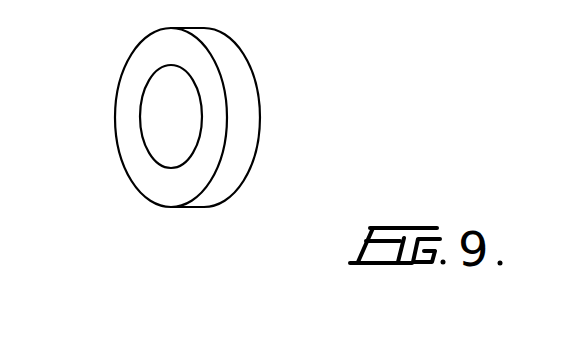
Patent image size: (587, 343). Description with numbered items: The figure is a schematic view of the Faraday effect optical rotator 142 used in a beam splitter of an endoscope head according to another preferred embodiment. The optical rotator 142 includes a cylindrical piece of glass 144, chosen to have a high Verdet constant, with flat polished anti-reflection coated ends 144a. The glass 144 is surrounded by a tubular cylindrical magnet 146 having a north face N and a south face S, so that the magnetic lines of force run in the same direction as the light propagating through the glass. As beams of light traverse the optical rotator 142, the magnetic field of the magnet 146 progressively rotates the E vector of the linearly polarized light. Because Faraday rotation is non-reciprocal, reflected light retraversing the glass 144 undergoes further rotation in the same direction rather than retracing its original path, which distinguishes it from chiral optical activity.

The optical rotator 142 is at (189, 144).
The cylindrical piece of glass 144 is at (203, 132).
The flat polished AR coated ends 144a is at (159, 116).
The tubular cylindrical magnet 146 is at (238, 45).